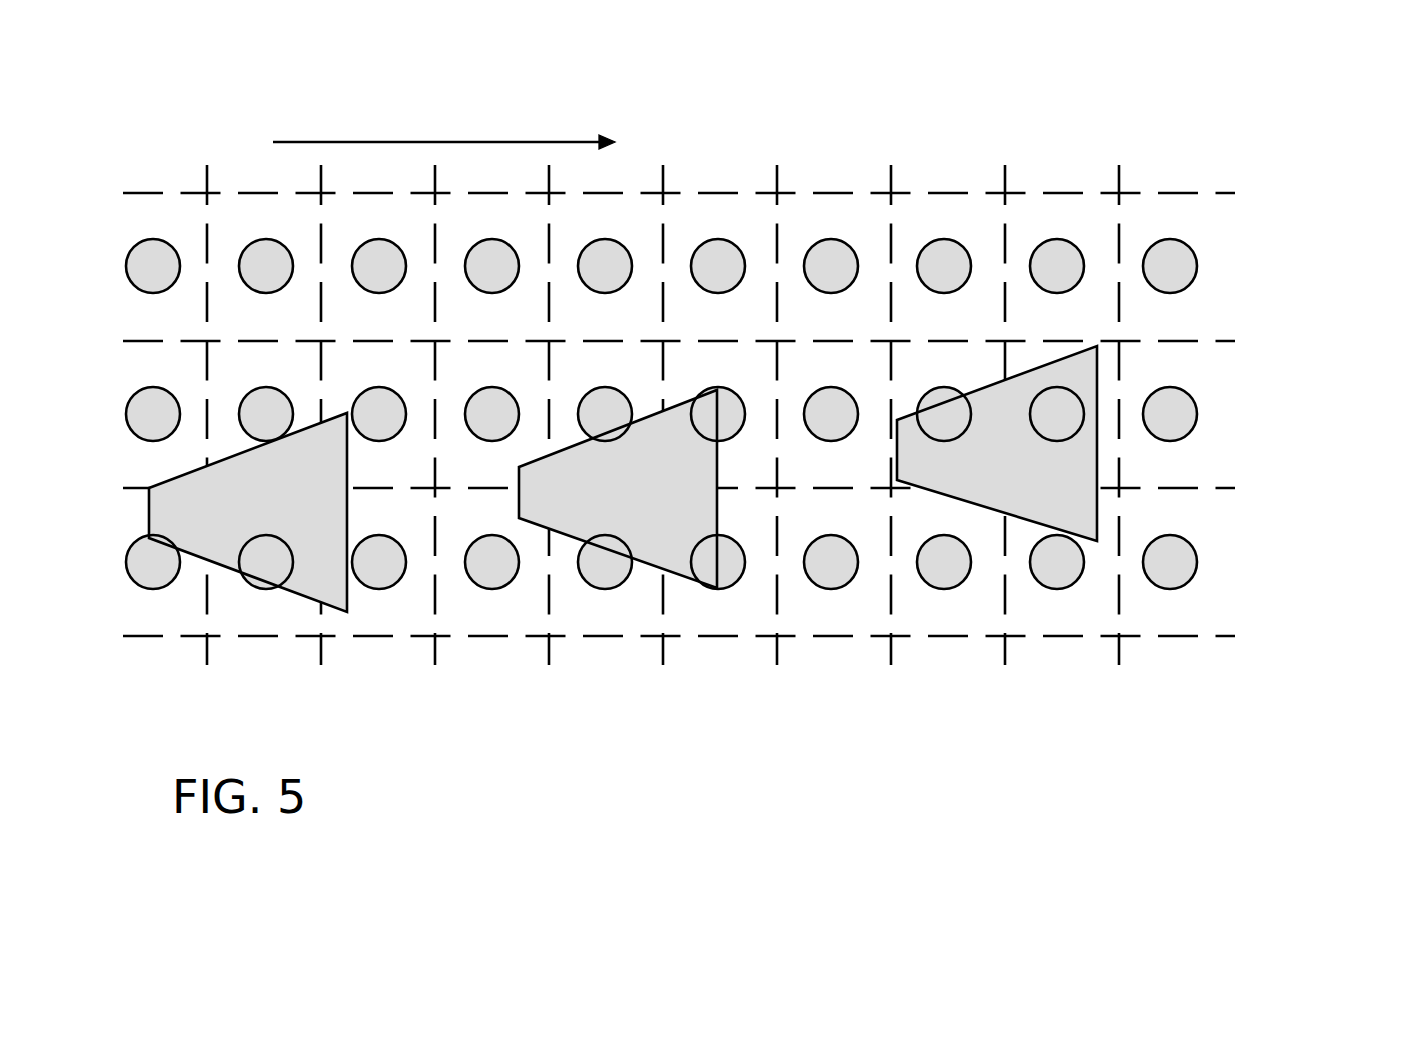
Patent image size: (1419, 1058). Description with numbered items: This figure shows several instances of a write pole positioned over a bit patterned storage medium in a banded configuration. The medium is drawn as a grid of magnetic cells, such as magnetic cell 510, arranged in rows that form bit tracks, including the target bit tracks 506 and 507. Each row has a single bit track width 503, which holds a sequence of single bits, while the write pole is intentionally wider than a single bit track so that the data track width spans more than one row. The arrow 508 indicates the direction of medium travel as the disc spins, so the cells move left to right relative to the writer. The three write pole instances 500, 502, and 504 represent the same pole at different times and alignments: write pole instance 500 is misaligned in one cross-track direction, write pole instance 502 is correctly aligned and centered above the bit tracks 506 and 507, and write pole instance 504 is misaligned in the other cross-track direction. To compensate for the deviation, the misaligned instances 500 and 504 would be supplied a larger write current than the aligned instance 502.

The write pole instance 500 is at (227, 453).
The write pole instance 502 is at (655, 413).
The single bit track width 503 is at (1242, 341).
The write pole instance 504 is at (1098, 348).
The bit track 506 is at (1250, 415).
The bit track 507 is at (1250, 567).
The arrow 508 is at (462, 142).
The magnetic cell 510 is at (833, 443).